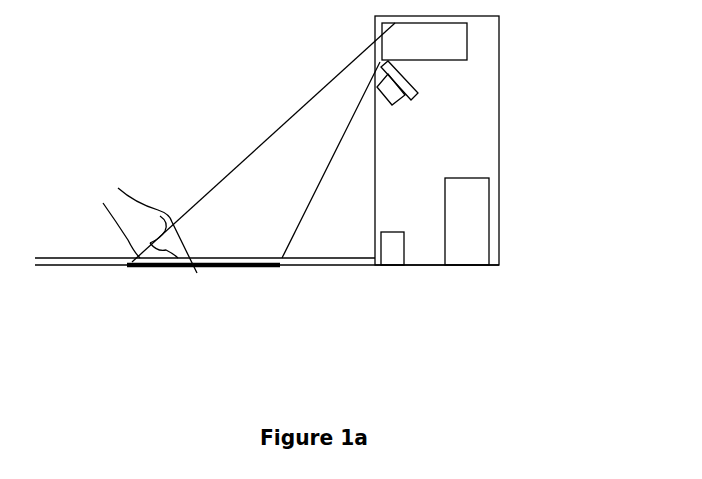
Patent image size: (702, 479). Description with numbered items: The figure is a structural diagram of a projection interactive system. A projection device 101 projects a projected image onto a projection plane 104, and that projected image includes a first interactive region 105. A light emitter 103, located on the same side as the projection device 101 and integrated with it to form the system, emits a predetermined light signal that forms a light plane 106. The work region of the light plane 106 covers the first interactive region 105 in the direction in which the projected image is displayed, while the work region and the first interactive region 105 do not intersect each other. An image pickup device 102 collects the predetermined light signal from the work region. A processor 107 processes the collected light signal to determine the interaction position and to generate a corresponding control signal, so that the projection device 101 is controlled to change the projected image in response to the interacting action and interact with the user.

The projection device 101 is at (468, 44).
The image pickup device 102 is at (417, 91).
The light emitter 103 is at (397, 265).
The projection plane 104 is at (67, 265).
The first interactive region 105 is at (190, 265).
The light plane 106 is at (312, 258).
The processor 107 is at (489, 220).